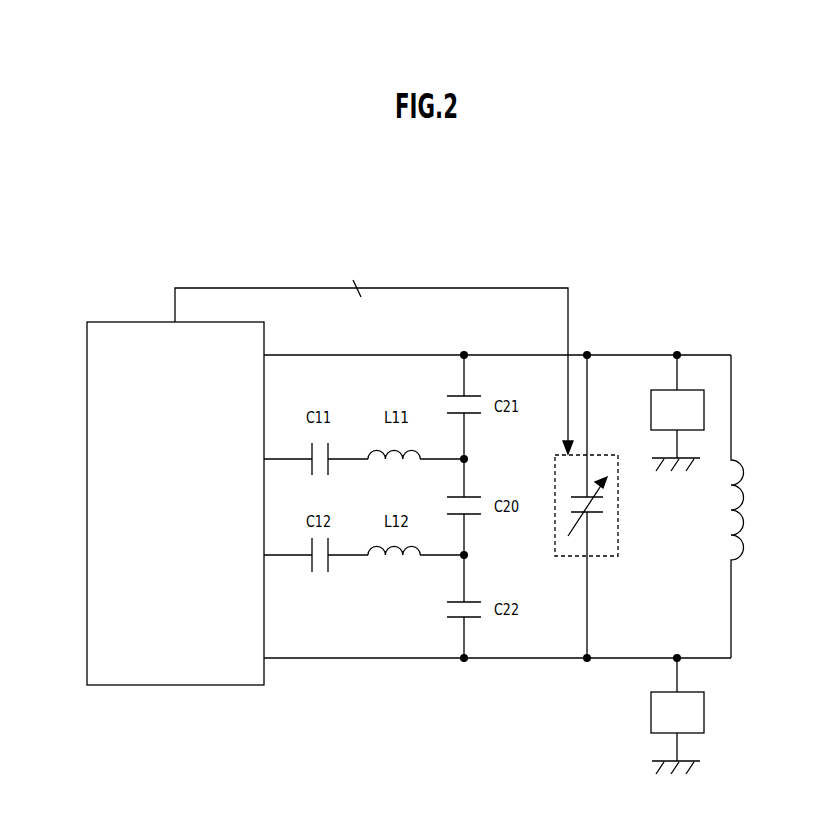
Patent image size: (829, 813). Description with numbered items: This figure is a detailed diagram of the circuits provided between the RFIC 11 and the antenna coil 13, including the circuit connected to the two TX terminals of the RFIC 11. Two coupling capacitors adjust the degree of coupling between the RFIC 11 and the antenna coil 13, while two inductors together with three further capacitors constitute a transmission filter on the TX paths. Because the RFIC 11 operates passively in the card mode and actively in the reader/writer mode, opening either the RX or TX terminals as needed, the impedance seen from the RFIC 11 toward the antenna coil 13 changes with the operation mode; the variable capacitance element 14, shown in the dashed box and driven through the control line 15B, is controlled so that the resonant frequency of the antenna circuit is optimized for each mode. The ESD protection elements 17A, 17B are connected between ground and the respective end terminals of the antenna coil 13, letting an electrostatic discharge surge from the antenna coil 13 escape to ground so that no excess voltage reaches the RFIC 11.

The RFIC 11 is at (87, 511).
The antenna coil 13 is at (748, 507).
The variable capacitance element 14 is at (603, 452).
The control signal line 15B is at (573, 302).
The ESD protection element 17A is at (706, 410).
The ESD protection element 17B is at (706, 712).